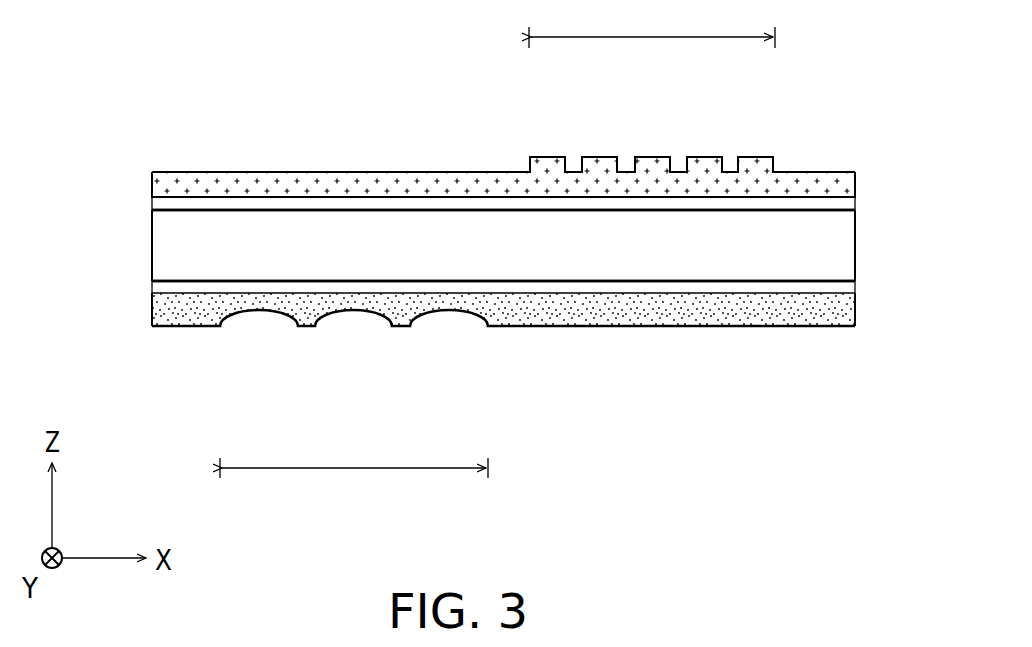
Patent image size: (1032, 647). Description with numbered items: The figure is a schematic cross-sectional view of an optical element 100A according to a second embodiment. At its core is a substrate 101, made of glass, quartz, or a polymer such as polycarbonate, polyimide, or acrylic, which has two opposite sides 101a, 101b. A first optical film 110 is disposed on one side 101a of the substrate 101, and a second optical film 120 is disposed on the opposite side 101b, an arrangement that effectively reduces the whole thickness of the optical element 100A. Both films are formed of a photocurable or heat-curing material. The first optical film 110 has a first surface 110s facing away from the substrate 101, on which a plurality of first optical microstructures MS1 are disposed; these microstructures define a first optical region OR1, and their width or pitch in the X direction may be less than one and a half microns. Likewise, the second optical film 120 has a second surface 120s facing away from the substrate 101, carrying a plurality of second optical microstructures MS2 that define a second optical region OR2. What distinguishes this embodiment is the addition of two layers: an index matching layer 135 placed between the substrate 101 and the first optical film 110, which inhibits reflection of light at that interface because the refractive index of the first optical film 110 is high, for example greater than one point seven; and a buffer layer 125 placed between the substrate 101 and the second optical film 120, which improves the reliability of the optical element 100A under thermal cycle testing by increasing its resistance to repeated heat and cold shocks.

The optical element 100A is at (502, 303).
The substrate 101 is at (500, 247).
The first side of substrate 101a is at (184, 208).
The second side of substrate 101b is at (180, 284).
The first optical film 110 is at (541, 148).
The first surface 110s is at (541, 134).
The second optical film 120 is at (498, 345).
The second surface 120s is at (465, 345).
The buffer layer 125 is at (838, 287).
The index matching layer 135 is at (838, 203).
The first optical microstructures MS1 is at (706, 161).
The second optical microstructures MS2 is at (446, 314).
The first optical region OR1 is at (652, 24).
The second optical region OR2 is at (354, 455).